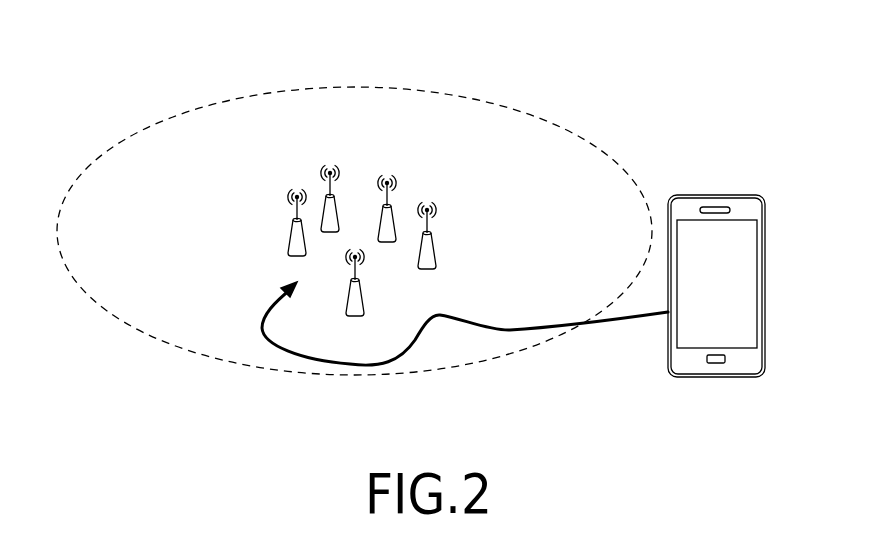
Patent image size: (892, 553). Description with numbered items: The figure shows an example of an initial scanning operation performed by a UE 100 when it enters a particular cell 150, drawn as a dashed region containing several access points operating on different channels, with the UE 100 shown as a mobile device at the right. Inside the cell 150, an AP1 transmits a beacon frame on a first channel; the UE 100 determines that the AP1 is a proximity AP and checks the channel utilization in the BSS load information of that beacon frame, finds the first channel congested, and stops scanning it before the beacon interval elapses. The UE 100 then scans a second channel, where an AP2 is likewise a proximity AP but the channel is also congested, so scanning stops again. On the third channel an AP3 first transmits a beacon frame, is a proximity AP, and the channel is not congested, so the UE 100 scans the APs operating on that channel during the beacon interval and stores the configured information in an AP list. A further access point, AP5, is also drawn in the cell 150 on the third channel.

The cell 150 is at (356, 86).
The UE 100 is at (715, 194).
The element AP1 is at (430, 251).
The element AP2 is at (356, 298).
The element AP3 is at (391, 189).
The access point 5 on channel 3 AP5 is at (247, 215).